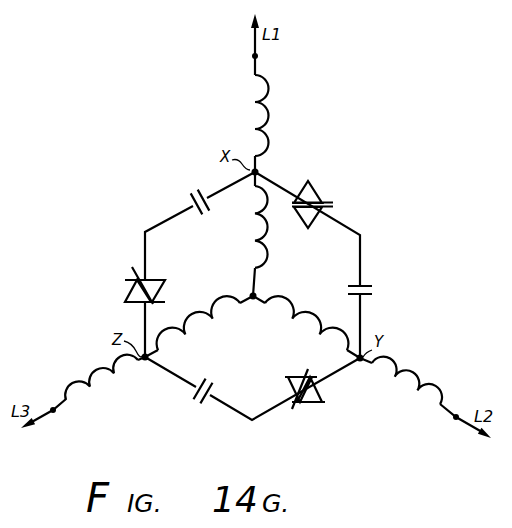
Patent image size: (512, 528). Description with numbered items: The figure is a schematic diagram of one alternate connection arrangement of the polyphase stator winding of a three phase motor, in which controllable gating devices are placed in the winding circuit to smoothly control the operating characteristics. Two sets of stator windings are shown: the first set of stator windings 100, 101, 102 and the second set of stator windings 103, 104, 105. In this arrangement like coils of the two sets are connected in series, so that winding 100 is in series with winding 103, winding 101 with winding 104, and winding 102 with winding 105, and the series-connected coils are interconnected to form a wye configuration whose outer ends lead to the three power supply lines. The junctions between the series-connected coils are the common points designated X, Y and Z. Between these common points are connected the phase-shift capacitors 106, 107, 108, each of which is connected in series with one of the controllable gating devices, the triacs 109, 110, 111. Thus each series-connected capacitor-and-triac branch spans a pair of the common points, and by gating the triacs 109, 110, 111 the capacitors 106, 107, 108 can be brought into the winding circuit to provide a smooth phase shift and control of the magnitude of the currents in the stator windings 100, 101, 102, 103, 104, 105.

The stator winding 100 is at (266, 113).
The stator winding 101 is at (412, 360).
The stator winding 102 is at (94, 370).
The stator winding 103 is at (264, 244).
The stator winding 104 is at (319, 318).
The stator winding 105 is at (192, 324).
The phase-shift capacitor 106 is at (373, 292).
The phase-shift capacitor 107 is at (192, 400).
The phase-shift capacitor 108 is at (193, 190).
The triac 109 is at (323, 200).
The triac 110 is at (316, 404).
The triac 111 is at (132, 285).